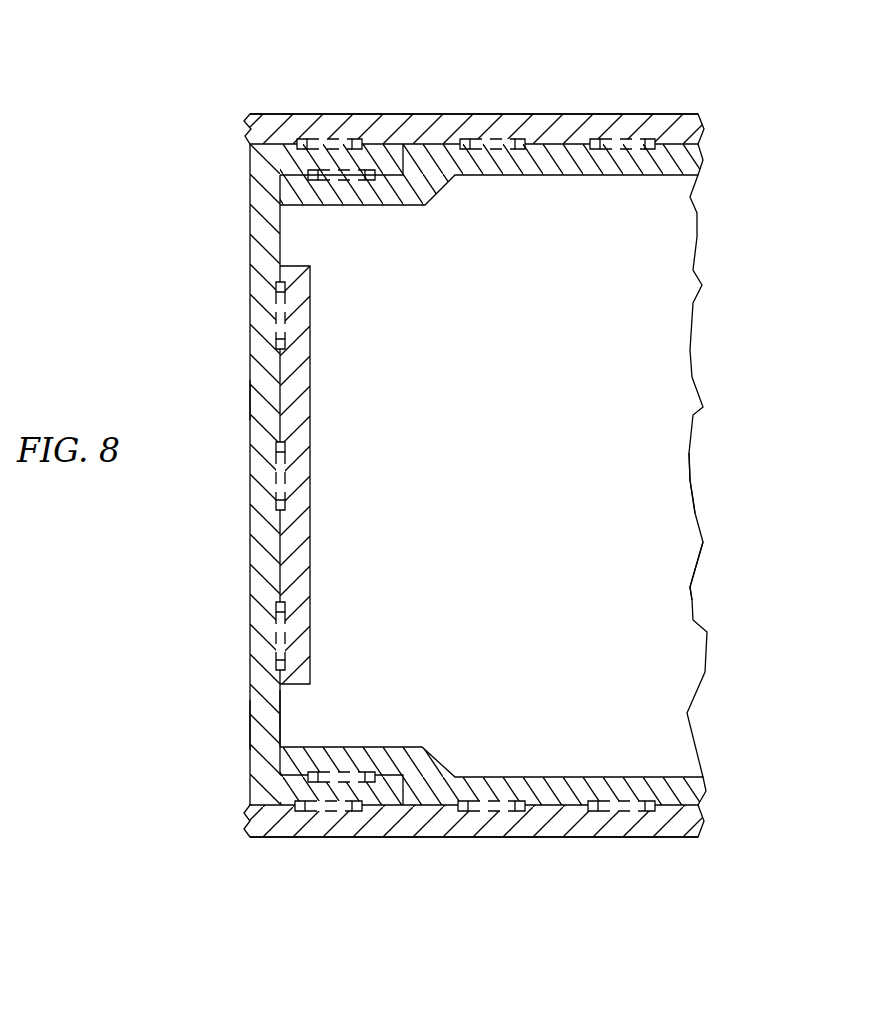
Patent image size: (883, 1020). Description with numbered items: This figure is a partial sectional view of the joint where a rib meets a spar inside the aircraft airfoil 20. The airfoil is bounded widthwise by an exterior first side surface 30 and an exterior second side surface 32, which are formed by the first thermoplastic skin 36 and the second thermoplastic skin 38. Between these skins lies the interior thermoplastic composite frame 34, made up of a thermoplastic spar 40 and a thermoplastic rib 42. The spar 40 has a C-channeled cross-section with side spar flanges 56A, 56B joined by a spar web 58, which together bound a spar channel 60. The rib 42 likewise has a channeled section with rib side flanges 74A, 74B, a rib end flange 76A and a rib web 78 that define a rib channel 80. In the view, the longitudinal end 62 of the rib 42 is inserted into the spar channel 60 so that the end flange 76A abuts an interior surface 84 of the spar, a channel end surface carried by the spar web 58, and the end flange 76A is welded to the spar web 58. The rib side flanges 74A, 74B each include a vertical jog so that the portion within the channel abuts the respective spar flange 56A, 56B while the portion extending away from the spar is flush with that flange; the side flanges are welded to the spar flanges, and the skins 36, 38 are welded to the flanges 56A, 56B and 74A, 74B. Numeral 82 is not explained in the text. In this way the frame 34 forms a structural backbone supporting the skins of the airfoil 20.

The aircraft airfoil 20 is at (789, 78).
The exterior first side surface 30 is at (485, 100).
The exterior second side surface 32 is at (477, 851).
The interior thermoplastic composite frame 34 is at (712, 215).
The first thermoplastic composite skin 36 is at (663, 107).
The second thermoplastic composite skin 38 is at (642, 842).
The thermoplastic composite spar 40 is at (237, 238).
The thermoplastic composite rib 42 is at (705, 572).
The side spar flange 56A is at (390, 143).
The side spar flange 56B is at (380, 815).
The spar web 58 is at (240, 401).
The spar channel 60 is at (290, 165).
The longitudinal end 62 is at (280, 577).
The rib side flange 74A is at (617, 178).
The rib side flange 74B is at (598, 770).
The rib end flange 76A is at (304, 475).
The rib web 78 is at (703, 476).
The rib channel 80 is at (655, 385).
The outer surface of end wall 82 is at (250, 725).
The interior surface 84 is at (282, 722).